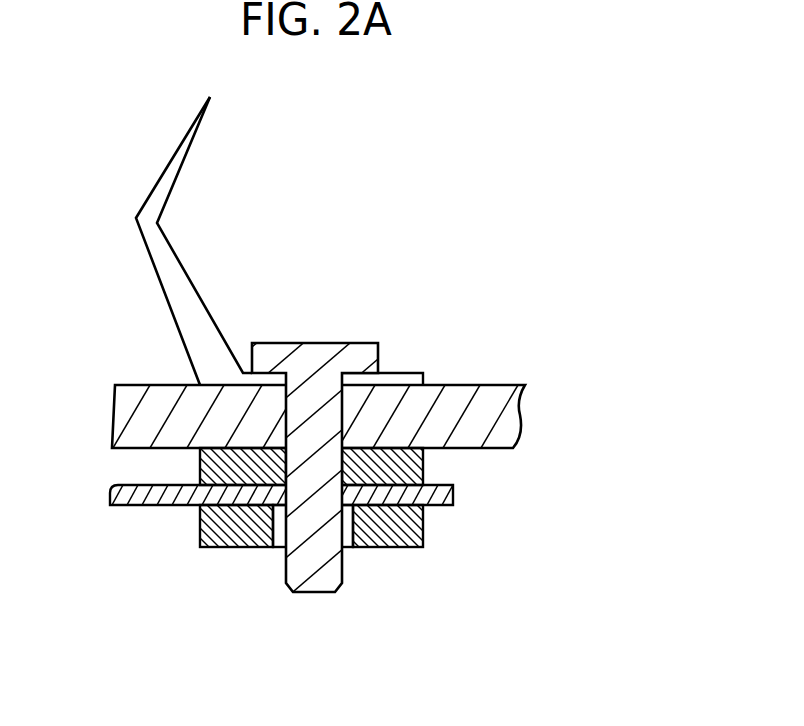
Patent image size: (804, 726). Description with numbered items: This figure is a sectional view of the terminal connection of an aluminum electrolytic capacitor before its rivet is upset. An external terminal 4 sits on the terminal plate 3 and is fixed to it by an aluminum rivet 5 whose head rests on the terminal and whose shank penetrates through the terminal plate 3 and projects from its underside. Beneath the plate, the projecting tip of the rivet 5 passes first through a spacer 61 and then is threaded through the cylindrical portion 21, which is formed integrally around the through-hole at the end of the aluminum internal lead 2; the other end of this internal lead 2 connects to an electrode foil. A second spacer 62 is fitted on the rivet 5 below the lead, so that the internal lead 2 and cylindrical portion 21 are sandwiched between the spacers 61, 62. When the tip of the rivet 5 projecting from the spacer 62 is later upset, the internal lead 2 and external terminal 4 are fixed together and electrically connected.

The internal lead 2 is at (135, 503).
The terminal plate 3 is at (470, 403).
The external terminal 4 is at (173, 177).
The aluminum rivet 5 is at (332, 343).
The cylindrical portion 21 is at (270, 537).
The spacer 61 is at (420, 470).
The spacer 62 is at (417, 530).